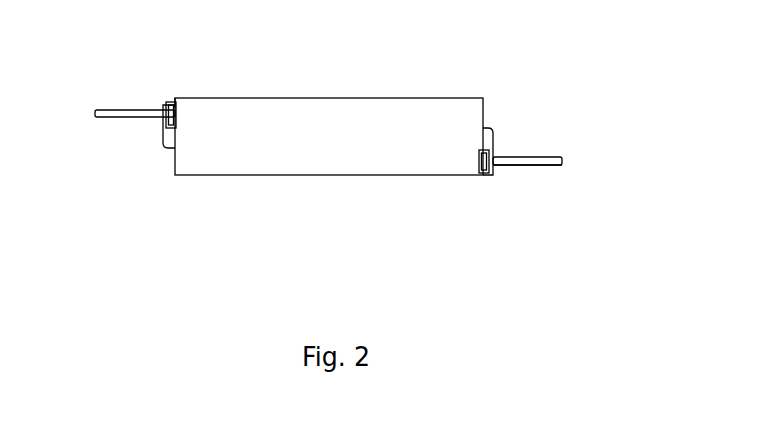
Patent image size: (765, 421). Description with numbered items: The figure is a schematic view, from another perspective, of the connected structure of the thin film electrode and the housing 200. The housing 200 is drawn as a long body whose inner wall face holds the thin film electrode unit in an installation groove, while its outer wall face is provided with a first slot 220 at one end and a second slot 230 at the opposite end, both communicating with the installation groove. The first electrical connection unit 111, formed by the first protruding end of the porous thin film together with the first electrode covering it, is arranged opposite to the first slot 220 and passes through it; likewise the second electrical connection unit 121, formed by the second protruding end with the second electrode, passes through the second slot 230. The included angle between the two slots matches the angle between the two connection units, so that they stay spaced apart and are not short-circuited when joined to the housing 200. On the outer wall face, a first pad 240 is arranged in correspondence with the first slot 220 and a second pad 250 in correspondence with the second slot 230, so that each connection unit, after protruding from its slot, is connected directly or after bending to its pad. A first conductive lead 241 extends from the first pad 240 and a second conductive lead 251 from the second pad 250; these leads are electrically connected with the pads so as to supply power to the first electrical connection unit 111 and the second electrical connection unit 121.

The housing 200 is at (329, 181).
The first slot 220 is at (540, 108).
The first pad 240 is at (487, 208).
The first conductive lead 241 is at (579, 133).
The first electrical connection unit 111 is at (556, 203).
The second slot 230 is at (115, 165).
The second electrical connection unit 121 is at (115, 137).
The second conductive lead 251 is at (115, 91).
The second pad 250 is at (140, 64).